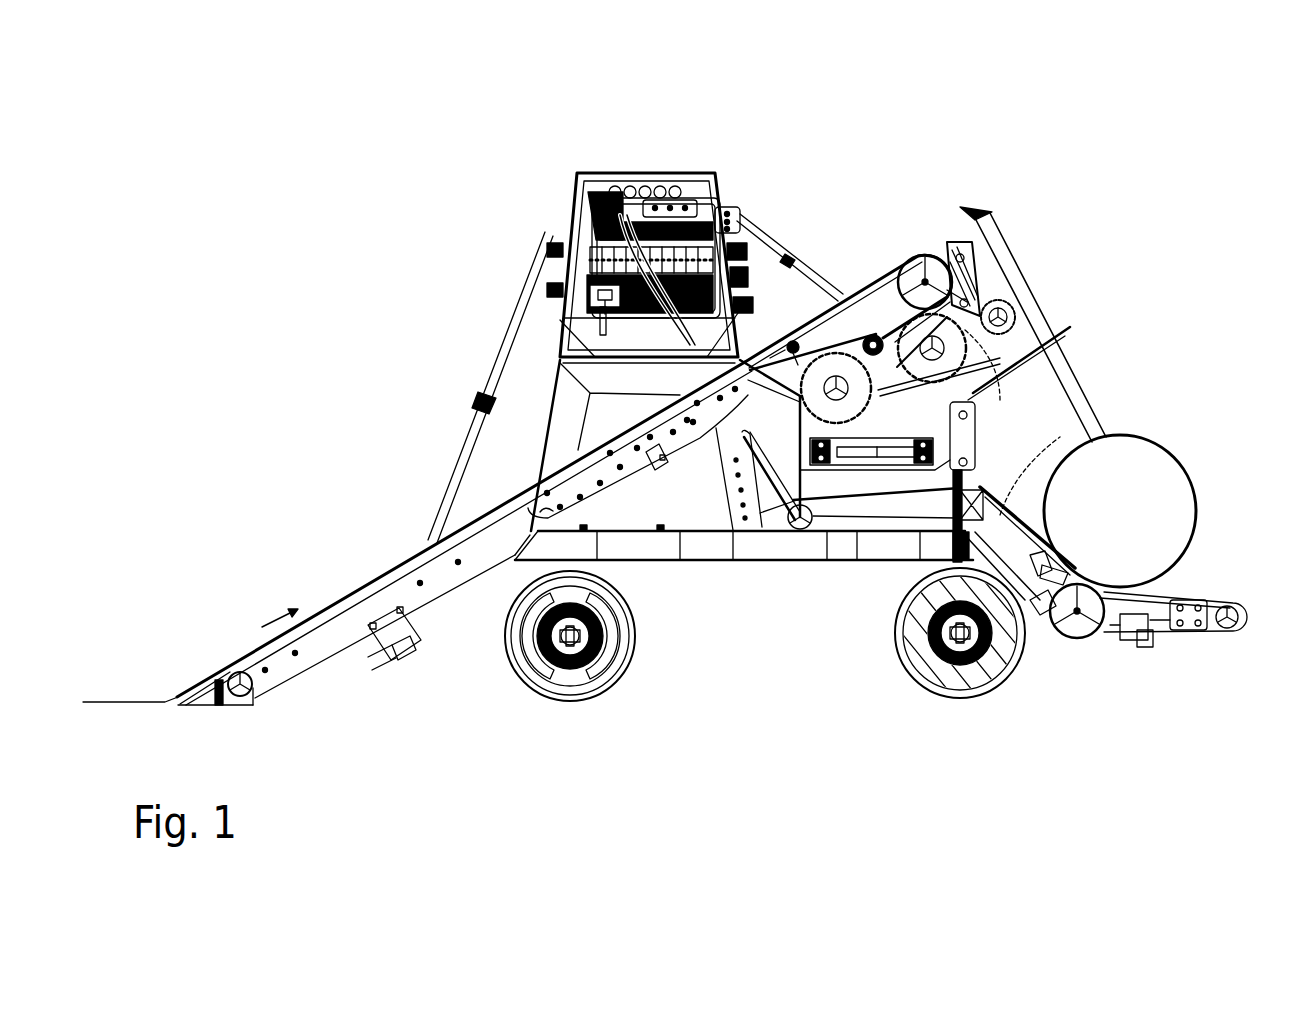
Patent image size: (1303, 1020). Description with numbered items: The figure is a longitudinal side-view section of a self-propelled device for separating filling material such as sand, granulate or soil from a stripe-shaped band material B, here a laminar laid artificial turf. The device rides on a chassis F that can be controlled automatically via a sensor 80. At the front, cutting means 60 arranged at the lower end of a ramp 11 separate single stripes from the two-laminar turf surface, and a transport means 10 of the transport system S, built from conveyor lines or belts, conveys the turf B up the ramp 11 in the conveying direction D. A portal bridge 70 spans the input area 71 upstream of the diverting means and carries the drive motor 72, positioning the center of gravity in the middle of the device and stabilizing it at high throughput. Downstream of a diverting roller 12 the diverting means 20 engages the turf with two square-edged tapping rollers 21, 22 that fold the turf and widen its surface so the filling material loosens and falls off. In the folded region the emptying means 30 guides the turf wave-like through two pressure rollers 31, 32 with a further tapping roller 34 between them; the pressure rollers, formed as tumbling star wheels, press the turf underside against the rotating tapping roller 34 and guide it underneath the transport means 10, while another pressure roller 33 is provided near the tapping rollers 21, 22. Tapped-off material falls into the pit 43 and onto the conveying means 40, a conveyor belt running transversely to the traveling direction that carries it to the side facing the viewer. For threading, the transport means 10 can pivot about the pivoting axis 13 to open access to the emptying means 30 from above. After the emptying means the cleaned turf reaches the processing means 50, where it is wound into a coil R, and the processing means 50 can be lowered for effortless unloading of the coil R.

The transport means 10 is at (870, 265).
The ramp 11 is at (498, 500).
The diverting roller 12 is at (922, 243).
The pivoting axis 13 is at (787, 348).
The diverting means 20 is at (990, 265).
The tapping roller 21 is at (980, 248).
The tapping roller 22 is at (980, 285).
The emptying means 30 is at (965, 415).
The pressure roller 31 is at (868, 333).
The pressure roller 32 is at (903, 400).
The pressure roller 33 is at (1037, 305).
The tapping roller 34 is at (960, 205).
The conveying means 40 is at (887, 468).
The pit 43 is at (1040, 428).
The processing means 50 is at (1073, 647).
The cutting means 60 is at (248, 705).
The portal bridge 70 is at (598, 170).
The input area 71 is at (522, 405).
The drive motor 72 is at (678, 190).
The sensor 80 is at (422, 652).
The band material B is at (830, 345).
The conveying direction D is at (280, 612).
The transport system S is at (608, 415).
The artificial turf coil R is at (1140, 527).
The chassis F is at (746, 709).